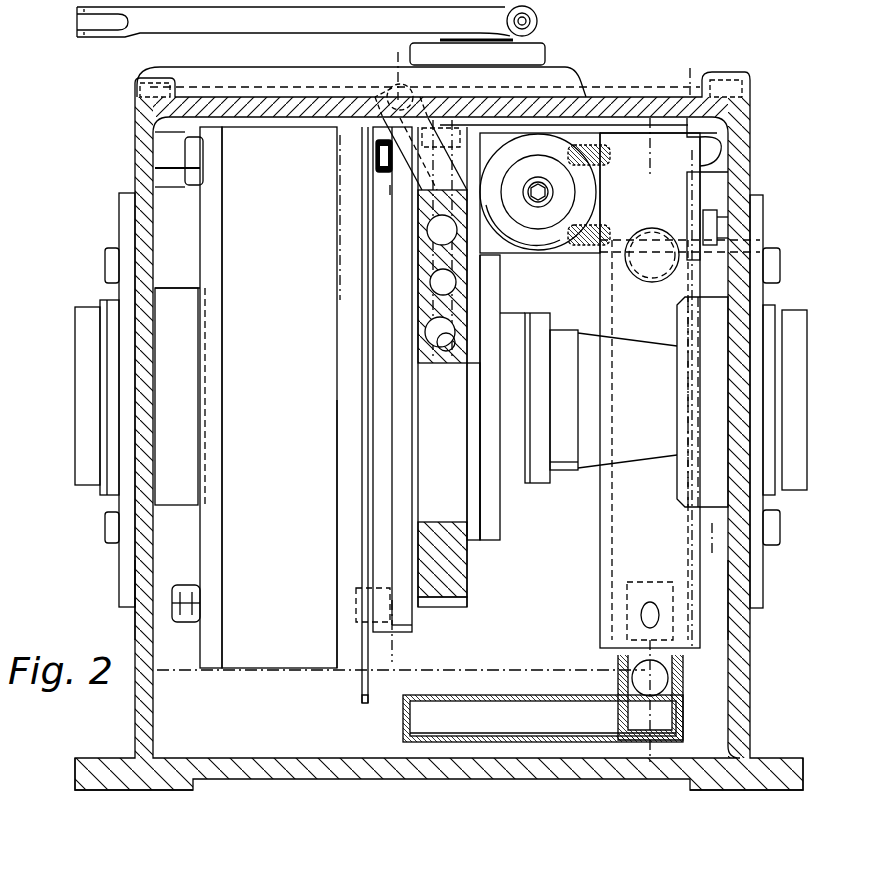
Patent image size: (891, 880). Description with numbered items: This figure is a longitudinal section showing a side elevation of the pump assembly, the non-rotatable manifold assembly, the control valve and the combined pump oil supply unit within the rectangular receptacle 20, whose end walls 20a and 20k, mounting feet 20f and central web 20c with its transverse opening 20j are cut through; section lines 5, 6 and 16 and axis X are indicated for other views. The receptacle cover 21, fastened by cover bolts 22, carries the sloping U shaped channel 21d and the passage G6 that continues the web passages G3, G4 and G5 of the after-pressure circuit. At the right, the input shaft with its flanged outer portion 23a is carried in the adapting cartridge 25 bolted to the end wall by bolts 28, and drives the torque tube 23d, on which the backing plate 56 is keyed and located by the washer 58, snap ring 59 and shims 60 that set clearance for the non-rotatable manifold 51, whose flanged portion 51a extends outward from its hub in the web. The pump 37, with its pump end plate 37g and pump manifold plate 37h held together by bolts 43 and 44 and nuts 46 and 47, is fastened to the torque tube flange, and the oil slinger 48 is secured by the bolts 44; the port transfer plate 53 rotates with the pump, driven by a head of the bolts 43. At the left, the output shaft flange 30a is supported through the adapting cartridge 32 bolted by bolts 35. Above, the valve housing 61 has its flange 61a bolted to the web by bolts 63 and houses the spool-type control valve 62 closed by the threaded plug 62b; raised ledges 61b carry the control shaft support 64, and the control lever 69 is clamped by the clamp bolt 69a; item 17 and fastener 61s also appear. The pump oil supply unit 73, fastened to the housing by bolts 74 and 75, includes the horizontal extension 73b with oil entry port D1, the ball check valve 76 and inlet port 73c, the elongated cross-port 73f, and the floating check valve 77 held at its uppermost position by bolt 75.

The receptacle 20 is at (742, 697).
The end wall 20a is at (742, 617).
The end wall 20k is at (137, 628).
The mounting feet 20f is at (88, 766).
The web portion 20c is at (465, 263).
The transverse opening 20j is at (462, 503).
The receptacle cover 21 is at (270, 81).
The U shaped channel 21d is at (732, 143).
The cover bolts 22 is at (134, 93).
The clamp block 17 is at (423, 53).
The control lever 69 is at (173, 20).
The clamp bolt 69a is at (508, 22).
The bolts 63 is at (420, 102).
The flange 61a is at (462, 160).
The control shaft support 64 is at (542, 121).
The raised ledges 61b is at (588, 129).
The valve housing 61 is at (527, 240).
The bracket bolts 61s is at (606, 168).
The control valve 62 is at (518, 221).
The threaded plug 62b is at (550, 195).
The pump oil supply unit 73 is at (638, 548).
The cross-port 73f is at (622, 623).
The inlet port 73c is at (672, 702).
The horizontal extension 73b is at (403, 717).
The ball check valve 76 is at (664, 677).
The oil entry port D1 is at (437, 737).
The floating check valve 77 is at (757, 246).
The bolt 74 is at (714, 157).
The bolt 75 is at (712, 212).
The adapting cartridge 25 is at (714, 312).
The flanged outer portion 23a is at (798, 334).
The bolts 28 is at (773, 268).
The torque tube 23d is at (592, 342).
The washer 58 is at (558, 330).
The retaining snap ring 59 is at (560, 474).
The shims 60 is at (541, 313).
The backing plate 56 is at (494, 463).
The non-rotatable manifold 51 is at (498, 498).
The flanged portion 51a is at (413, 625).
The horizontal passage G5 is at (440, 228).
The passage G3 is at (436, 330).
The horizontal passage G4 is at (442, 345).
The passage G6 is at (390, 188).
The nut 47 is at (374, 162).
The bolt 44 is at (197, 163).
The bolt 43 is at (180, 594).
The nut 46 is at (188, 624).
The bolts 35 is at (110, 262).
The adapting cartridge 32 is at (162, 484).
The flanged portion 30a is at (83, 325).
The pump end plate 37g is at (213, 660).
The pump 37 is at (284, 658).
The pump manifold plate 37h is at (350, 658).
The port transfer plate 53 is at (362, 528).
The oil slinger 48 is at (370, 697).
The section line 6- 6 is at (326, 143).
The section line 16- 16 is at (655, 78).
The section line 5- 5 is at (617, 125).
The axis X is at (401, 662).